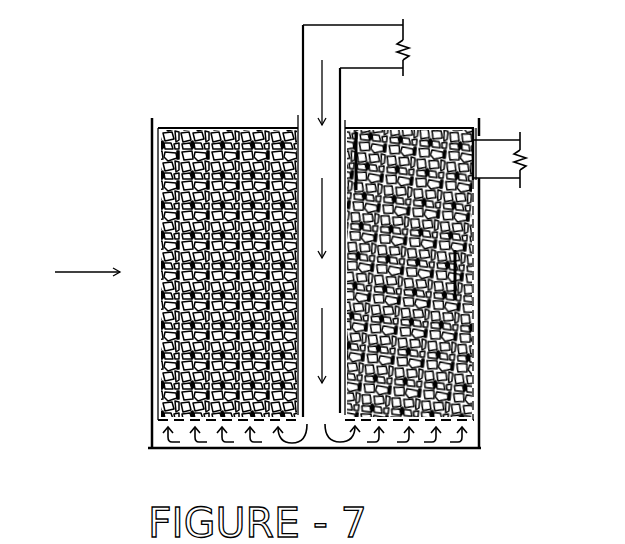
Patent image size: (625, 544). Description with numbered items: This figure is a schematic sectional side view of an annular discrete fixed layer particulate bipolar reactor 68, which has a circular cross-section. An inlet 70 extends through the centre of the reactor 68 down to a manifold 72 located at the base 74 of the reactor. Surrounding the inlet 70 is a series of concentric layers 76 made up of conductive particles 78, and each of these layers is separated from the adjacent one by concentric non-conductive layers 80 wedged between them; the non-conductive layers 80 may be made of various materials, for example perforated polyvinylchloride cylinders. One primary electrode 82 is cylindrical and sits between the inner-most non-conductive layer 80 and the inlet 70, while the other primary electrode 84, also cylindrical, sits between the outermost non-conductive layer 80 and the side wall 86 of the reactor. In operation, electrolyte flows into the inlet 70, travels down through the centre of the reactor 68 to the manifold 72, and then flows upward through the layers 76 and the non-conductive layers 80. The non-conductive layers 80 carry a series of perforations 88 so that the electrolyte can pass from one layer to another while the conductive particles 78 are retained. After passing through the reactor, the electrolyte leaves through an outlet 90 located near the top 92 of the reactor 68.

The annular discrete fixed layer particulate bipolar reactor 68 is at (71, 272).
The inlet 70 is at (406, 57).
The manifold 72 is at (412, 441).
The base 74 is at (462, 450).
The concentric layers 76 is at (385, 130).
The conductive particles 78 is at (356, 130).
The non-conductive layers 80 is at (428, 130).
The primary electrode 82 is at (300, 122).
The other primary electrode 84 is at (156, 168).
The side wall 86 is at (482, 309).
The perforations 88 is at (473, 244).
The outlet 90 is at (530, 145).
The top 92 is at (178, 128).